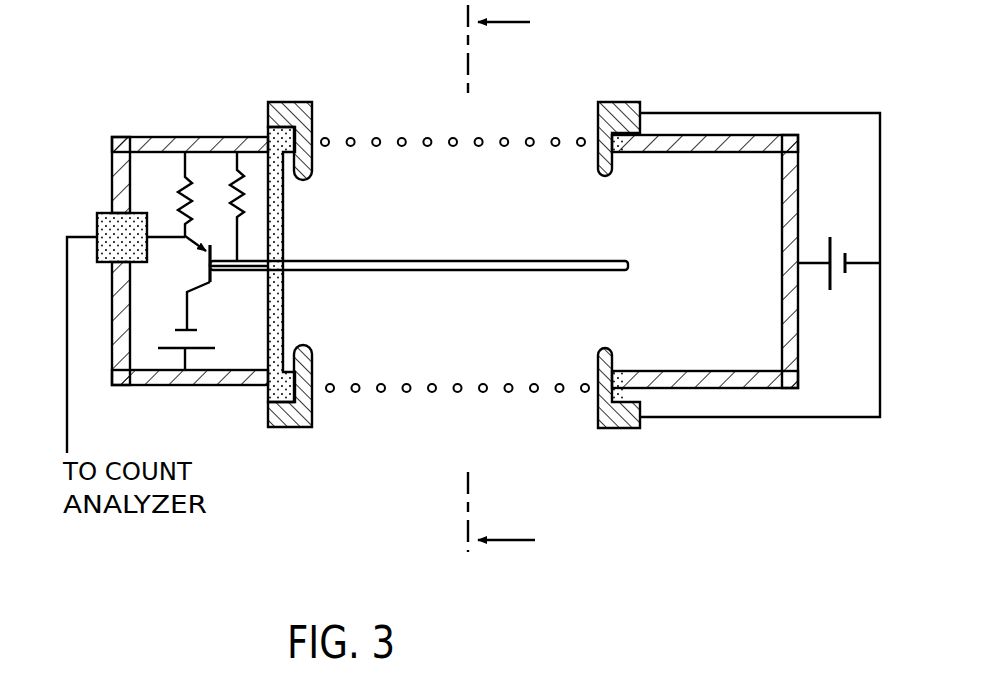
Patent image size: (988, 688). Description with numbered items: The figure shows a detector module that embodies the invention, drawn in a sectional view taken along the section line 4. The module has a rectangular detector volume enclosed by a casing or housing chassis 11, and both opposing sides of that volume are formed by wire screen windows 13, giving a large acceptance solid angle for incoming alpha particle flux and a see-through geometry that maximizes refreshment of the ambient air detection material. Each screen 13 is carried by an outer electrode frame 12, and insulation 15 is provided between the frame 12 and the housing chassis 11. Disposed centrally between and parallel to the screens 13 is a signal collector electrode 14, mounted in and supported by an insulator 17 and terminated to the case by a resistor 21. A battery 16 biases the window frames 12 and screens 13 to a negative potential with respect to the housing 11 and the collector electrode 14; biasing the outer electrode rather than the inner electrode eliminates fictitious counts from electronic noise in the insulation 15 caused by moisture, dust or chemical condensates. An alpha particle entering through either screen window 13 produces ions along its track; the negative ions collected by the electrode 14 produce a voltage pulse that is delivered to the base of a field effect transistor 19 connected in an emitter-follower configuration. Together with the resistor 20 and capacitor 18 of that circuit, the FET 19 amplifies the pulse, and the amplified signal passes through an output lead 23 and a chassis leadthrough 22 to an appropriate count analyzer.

The section line 4- 4 is at (515, 281).
The casing 11 is at (183, 387).
The frame 12 is at (290, 428).
The wire screen window 13 is at (503, 138).
The signal collector electrode 14 is at (548, 272).
The insulation 15 is at (618, 153).
The battery 16 is at (823, 246).
The insulator 17 is at (283, 236).
The capacitor 18 is at (165, 345).
The field effect transistor 19 is at (196, 283).
The resistor 20 is at (181, 200).
The resistor 21 is at (232, 193).
The chassis leadthrough 22 is at (97, 225).
The output lead 23 is at (67, 365).